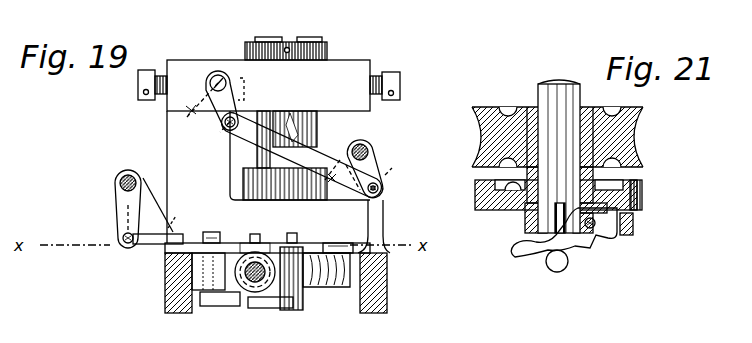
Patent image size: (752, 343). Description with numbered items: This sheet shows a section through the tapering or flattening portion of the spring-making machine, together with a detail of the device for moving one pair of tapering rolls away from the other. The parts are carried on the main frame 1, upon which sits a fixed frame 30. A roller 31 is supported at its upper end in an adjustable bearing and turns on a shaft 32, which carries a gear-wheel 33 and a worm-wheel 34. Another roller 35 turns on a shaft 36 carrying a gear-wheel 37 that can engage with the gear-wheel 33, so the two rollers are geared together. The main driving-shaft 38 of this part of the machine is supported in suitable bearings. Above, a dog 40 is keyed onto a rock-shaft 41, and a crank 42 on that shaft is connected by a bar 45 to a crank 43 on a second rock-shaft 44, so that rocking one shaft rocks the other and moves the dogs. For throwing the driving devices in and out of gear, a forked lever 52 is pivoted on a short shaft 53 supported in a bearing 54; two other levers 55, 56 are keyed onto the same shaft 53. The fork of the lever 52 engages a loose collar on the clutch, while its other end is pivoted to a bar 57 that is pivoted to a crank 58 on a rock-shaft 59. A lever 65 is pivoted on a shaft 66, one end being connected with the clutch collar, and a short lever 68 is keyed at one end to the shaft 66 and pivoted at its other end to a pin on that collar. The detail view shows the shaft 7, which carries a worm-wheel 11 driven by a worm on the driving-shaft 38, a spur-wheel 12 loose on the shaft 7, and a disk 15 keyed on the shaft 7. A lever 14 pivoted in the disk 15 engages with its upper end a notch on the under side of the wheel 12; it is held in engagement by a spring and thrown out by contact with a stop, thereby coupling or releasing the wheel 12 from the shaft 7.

In FIG. 19, the main frame 1 is at (172, 290).
In FIG. 21, the shaft 7 is at (553, 97).
In FIG. 21, the worm-wheel 11 is at (505, 128).
In FIG. 21, the spur-wheel 12 is at (641, 193).
In FIG. 21, the lever 14 is at (588, 250).
In FIG. 21, the disk 15 is at (634, 228).
In FIG. 19, the fixed frame 30 is at (269, 151).
In FIG. 19, the roller 31 is at (322, 46).
In FIG. 19, the shaft 32 is at (312, 130).
In FIG. 19, the gear-wheel 33 is at (378, 200).
In FIG. 19, the worm-wheel 34 is at (322, 289).
In FIG. 19, the roller 35 is at (260, 43).
In FIG. 19, the shaft 36 is at (262, 162).
In FIG. 19, the gear-wheel 37 is at (250, 188).
In FIG. 19, the main driving-shaft 38 is at (256, 280).
In FIG. 19, the dog 40 is at (242, 110).
In FIG. 19, the rock-shaft 41 is at (212, 79).
In FIG. 19, the crank 42 is at (200, 116).
In FIG. 19, the crank 43 is at (375, 163).
In FIG. 19, the rock-shaft 44 is at (369, 148).
In FIG. 19, the bar 45 is at (302, 155).
In FIG. 19, the forked lever 52 is at (210, 234).
In FIG. 19, the short shaft 53 is at (256, 235).
In FIG. 19, the bearing 54 is at (207, 292).
In FIG. 19, the lever 55 is at (264, 242).
In FIG. 19, the lever 56 is at (228, 302).
In FIG. 19, the bar 57 is at (148, 247).
In FIG. 19, the crank 58 is at (126, 233).
In FIG. 19, the rock-shaft 59 is at (128, 172).
In FIG. 19, the lever 65 is at (332, 243).
In FIG. 19, the shaft 66 is at (292, 234).
In FIG. 19, the short lever 68 is at (272, 306).